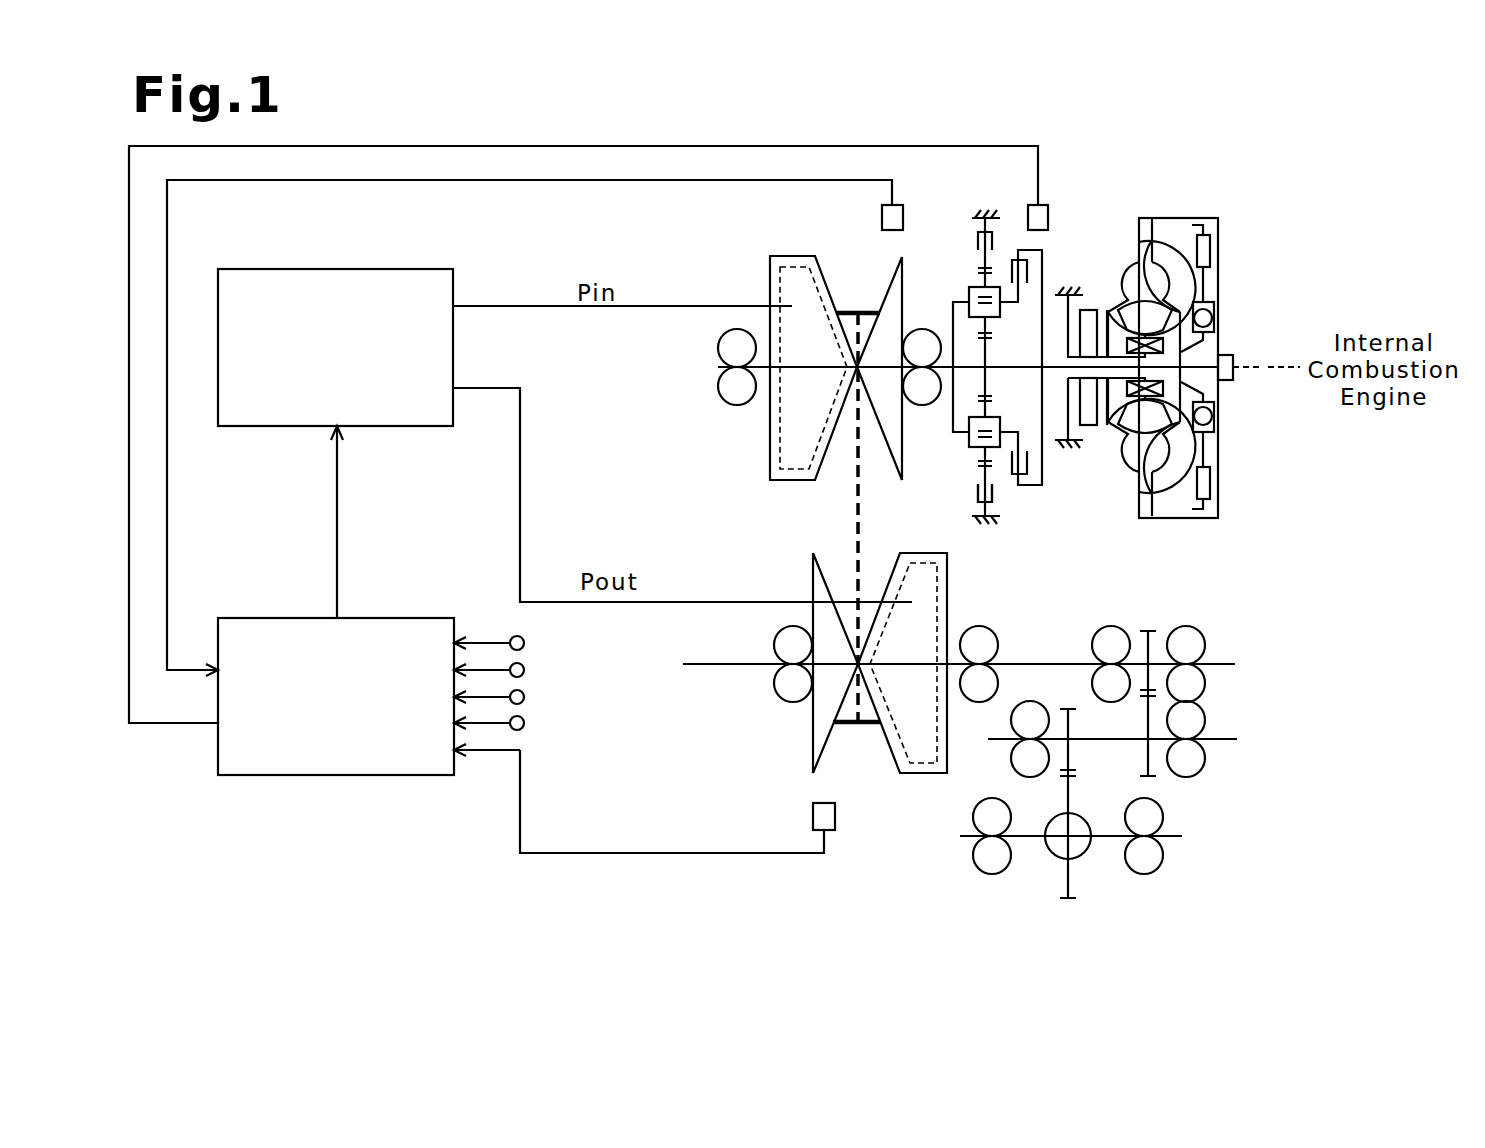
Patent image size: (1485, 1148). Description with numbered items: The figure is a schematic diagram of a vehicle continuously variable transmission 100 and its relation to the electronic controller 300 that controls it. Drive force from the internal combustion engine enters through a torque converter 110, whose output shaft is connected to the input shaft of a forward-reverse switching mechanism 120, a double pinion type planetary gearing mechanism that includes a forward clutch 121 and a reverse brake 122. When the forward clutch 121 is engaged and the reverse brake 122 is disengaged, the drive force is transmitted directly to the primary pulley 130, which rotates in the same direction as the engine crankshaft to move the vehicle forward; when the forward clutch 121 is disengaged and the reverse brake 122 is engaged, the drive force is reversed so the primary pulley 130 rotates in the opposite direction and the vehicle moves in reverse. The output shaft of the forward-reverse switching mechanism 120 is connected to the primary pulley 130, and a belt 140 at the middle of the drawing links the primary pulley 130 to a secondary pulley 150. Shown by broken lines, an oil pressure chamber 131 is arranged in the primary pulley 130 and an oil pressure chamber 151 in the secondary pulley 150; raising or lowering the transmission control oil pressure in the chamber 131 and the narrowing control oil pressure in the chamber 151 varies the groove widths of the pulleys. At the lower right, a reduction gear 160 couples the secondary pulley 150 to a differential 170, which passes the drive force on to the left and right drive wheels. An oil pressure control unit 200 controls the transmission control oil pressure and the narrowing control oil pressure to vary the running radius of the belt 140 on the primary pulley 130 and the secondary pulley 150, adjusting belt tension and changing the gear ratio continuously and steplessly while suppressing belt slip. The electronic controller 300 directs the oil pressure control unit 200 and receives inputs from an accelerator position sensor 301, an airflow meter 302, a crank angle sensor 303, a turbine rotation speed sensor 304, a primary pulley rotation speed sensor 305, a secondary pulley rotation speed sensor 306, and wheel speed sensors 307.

The continuously variable transmission 100 is at (1274, 631).
The torque converter 110 is at (1181, 218).
The forward-reverse switching mechanism 120 is at (1040, 268).
The forward clutch 121 is at (1010, 474).
The reverse brake 122 is at (978, 496).
The primary pulley 130 is at (794, 256).
The oil pressure chamber 131 is at (790, 432).
The belt 140 is at (857, 503).
The secondary pulley 150 is at (918, 773).
The oil pressure chamber 151 is at (930, 625).
The reduction gear 160 is at (1160, 741).
The differential 170 is at (1115, 880).
The oil pressure control unit 200 is at (407, 269).
The electronic controller 300 is at (407, 618).
The accelerator position sensor 301 is at (524, 643).
The airflow meter 302 is at (524, 670).
The crank angle sensor 303 is at (524, 697).
The turbine rotation speed sensor 304 is at (1048, 212).
The primary pulley rotation speed sensor 305 is at (903, 214).
The secondary pulley rotation speed sensor 306 is at (813, 817).
The wheel speed sensors 307 is at (524, 723).